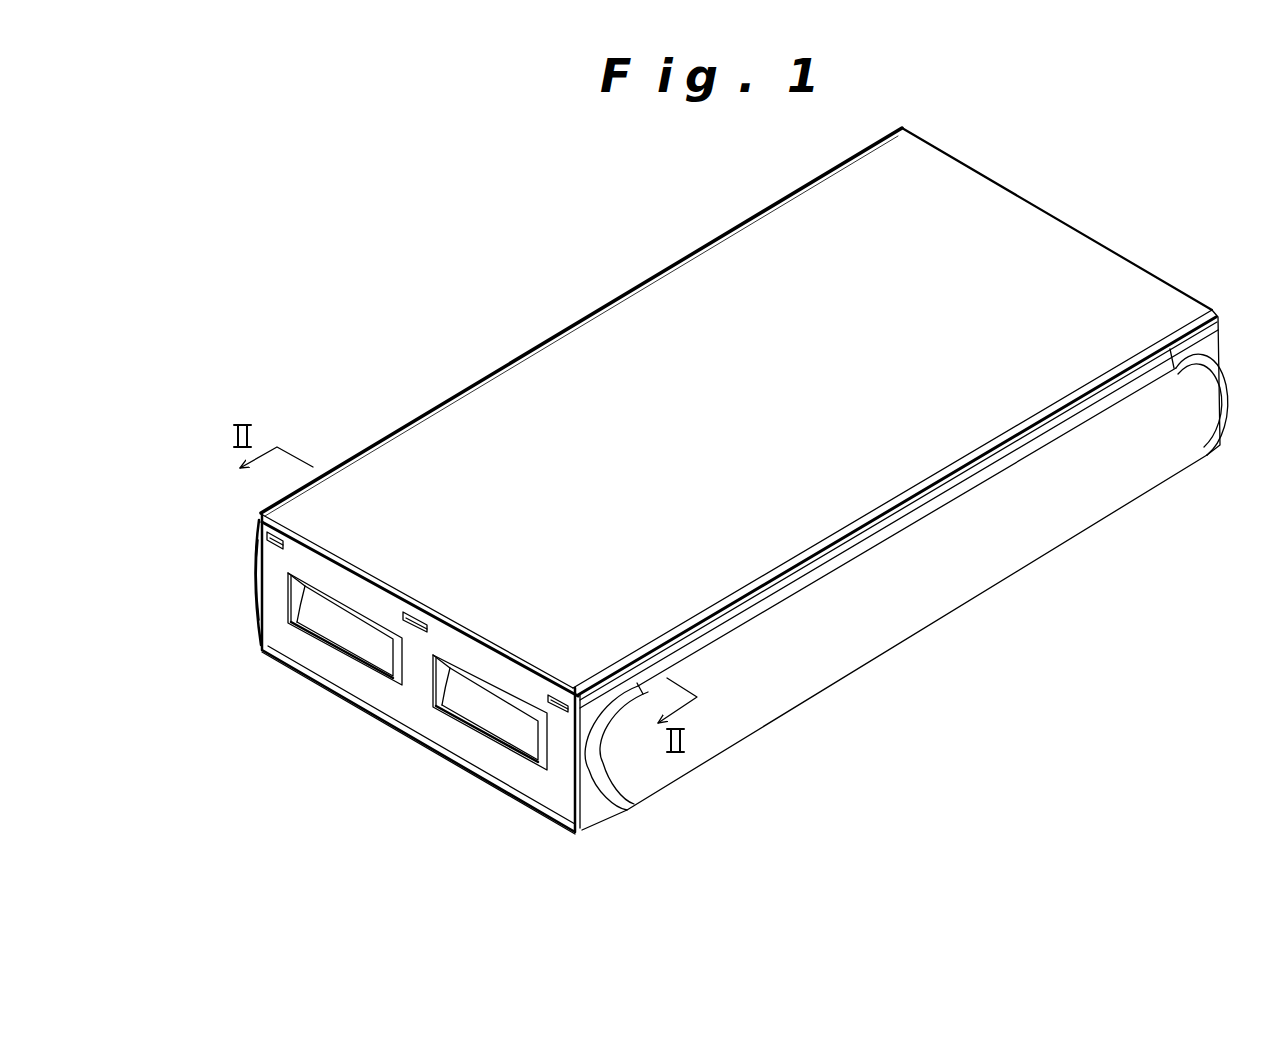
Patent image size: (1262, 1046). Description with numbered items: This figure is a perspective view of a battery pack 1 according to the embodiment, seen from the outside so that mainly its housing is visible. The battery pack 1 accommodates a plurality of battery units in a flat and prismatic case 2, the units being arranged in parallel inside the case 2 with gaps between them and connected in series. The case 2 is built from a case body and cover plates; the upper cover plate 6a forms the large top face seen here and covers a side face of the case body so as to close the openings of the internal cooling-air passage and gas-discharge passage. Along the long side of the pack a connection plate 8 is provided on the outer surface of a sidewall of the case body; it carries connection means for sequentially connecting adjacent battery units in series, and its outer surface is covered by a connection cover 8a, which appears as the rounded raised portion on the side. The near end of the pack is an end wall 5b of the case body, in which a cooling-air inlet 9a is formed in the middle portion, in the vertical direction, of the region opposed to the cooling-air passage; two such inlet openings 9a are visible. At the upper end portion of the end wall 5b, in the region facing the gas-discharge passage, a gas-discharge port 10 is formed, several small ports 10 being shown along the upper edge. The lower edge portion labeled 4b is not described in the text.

The battery pack 1 is at (548, 258).
The case 2 is at (1086, 226).
The front wall of lower case 4b is at (508, 800).
The end wall 5b is at (290, 638).
The cover plate 6a is at (522, 387).
The connection plate 8 is at (593, 808).
The connection cover 8a is at (786, 694).
The cooling-air inlet 9a is at (350, 643).
The gas-discharge port 10 is at (256, 556).